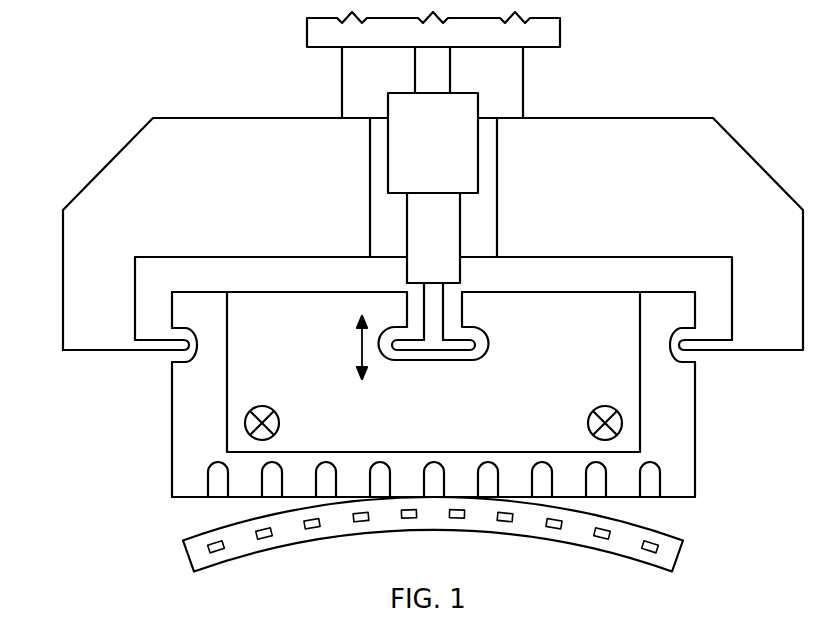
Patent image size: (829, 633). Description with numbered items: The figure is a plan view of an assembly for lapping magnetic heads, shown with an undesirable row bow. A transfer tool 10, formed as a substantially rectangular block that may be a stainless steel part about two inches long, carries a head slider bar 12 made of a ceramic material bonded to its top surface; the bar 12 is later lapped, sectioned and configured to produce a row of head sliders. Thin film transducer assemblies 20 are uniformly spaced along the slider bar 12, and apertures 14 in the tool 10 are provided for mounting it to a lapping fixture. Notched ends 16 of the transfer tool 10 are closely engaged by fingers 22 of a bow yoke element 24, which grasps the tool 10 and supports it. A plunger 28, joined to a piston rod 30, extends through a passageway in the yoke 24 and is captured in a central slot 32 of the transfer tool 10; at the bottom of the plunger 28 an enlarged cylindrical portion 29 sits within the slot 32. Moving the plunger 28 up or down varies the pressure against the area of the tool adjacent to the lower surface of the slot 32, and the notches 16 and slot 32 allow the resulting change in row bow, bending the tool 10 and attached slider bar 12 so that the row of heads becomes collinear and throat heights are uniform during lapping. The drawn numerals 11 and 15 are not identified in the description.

The transfer tool 10 is at (680, 425).
The bottom wall with vent slots 11 is at (190, 483).
The head slider bar 12 is at (590, 555).
The apertures 14 is at (245, 423).
The gap 15 is at (627, 510).
The notched ends 16 is at (170, 360).
The thin film transducer assemblies 20 is at (310, 530).
The fingers 22 is at (723, 348).
The bow yoke element 24 is at (98, 172).
The plunger 28 is at (465, 150).
The enlarged cylindrical portion 29 is at (475, 350).
The piston rod 30 is at (442, 65).
The central slot 32 is at (487, 347).